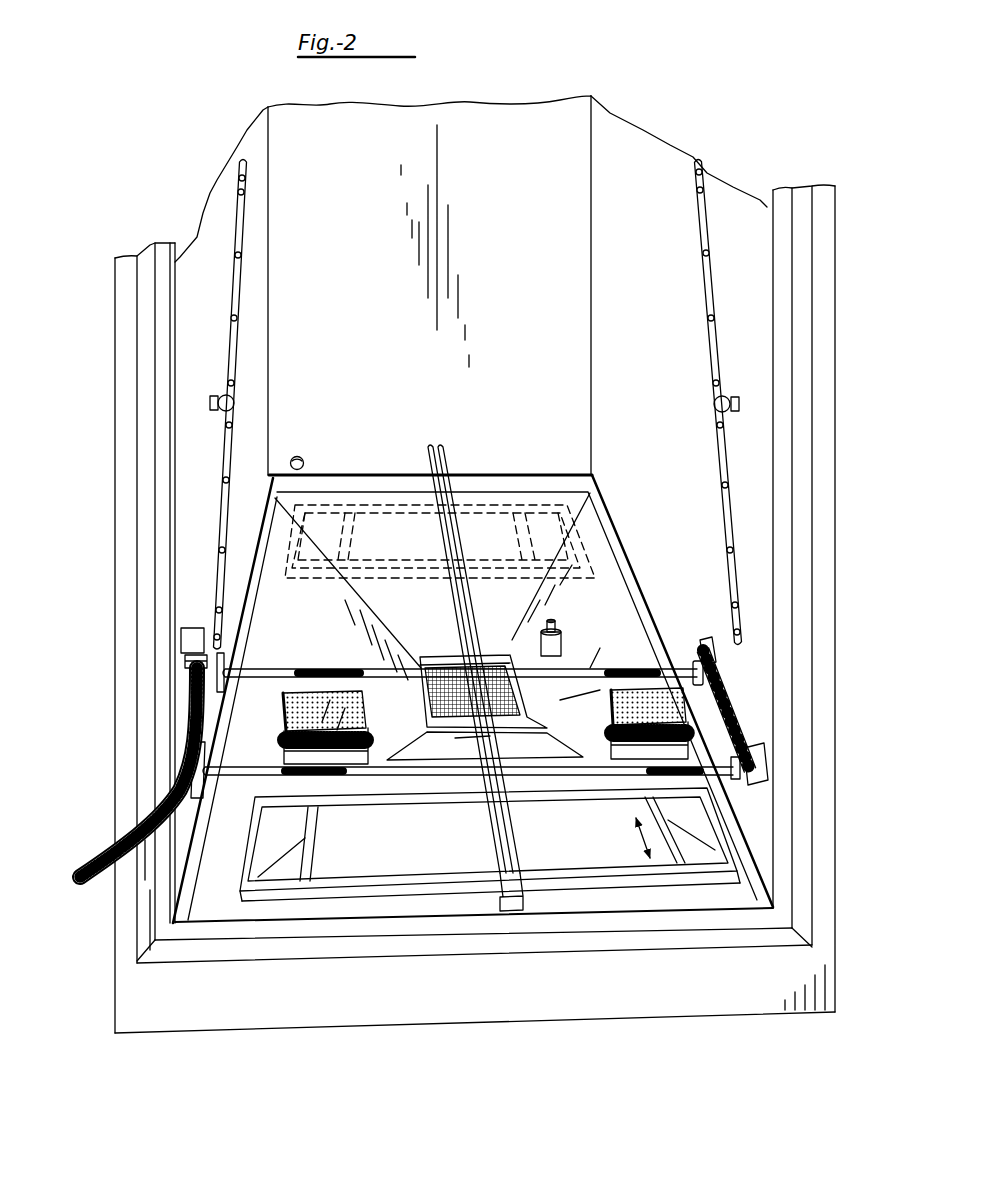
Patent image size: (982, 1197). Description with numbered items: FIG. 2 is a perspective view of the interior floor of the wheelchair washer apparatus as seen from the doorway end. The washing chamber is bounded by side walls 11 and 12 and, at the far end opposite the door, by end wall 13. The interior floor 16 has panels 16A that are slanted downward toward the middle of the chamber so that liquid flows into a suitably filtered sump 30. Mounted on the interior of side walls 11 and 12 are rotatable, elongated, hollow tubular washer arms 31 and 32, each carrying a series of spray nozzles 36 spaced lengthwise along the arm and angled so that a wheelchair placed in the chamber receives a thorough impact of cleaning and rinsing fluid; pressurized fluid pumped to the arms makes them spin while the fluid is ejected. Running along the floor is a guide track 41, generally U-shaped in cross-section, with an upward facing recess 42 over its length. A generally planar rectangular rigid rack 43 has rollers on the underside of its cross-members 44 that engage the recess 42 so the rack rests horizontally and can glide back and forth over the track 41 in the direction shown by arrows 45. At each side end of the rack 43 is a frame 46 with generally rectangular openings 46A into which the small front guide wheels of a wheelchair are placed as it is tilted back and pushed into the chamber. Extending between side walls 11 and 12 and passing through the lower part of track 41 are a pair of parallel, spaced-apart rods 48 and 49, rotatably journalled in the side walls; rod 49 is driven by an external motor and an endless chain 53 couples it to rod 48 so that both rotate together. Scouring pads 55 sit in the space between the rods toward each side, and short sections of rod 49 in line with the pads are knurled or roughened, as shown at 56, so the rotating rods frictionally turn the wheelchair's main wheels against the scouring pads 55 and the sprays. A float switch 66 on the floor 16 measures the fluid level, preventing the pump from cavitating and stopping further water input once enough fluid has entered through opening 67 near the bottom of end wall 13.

The side wall 11 is at (627, 153).
The side wall 12 is at (202, 248).
The end wall 13 is at (522, 259).
The interior floor 16 is at (621, 588).
The floor panels 16A is at (358, 658).
The sump 30 is at (430, 697).
The washer arm 31 is at (715, 322).
The washer arm 32 is at (232, 340).
The spray nozzles 36 is at (240, 318).
The guide track 41 is at (447, 636).
The recess 42 is at (462, 592).
The rack 43 is at (343, 507).
The cross-members 44 is at (335, 878).
The arrows 45 is at (643, 842).
The frame 46 is at (633, 877).
The rectangular openings 46A is at (270, 843).
The rod 48 is at (380, 635).
The rod 49 is at (538, 757).
The endless chain 53 is at (738, 737).
The scouring pads 55 is at (287, 713).
The knurled sections 56 is at (313, 667).
The float switch 66 is at (560, 640).
The opening 67 is at (292, 457).